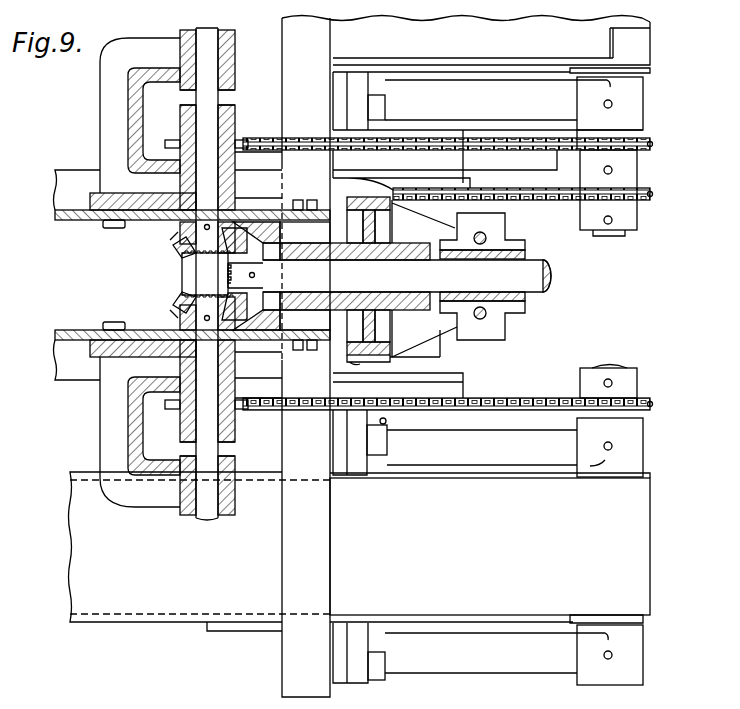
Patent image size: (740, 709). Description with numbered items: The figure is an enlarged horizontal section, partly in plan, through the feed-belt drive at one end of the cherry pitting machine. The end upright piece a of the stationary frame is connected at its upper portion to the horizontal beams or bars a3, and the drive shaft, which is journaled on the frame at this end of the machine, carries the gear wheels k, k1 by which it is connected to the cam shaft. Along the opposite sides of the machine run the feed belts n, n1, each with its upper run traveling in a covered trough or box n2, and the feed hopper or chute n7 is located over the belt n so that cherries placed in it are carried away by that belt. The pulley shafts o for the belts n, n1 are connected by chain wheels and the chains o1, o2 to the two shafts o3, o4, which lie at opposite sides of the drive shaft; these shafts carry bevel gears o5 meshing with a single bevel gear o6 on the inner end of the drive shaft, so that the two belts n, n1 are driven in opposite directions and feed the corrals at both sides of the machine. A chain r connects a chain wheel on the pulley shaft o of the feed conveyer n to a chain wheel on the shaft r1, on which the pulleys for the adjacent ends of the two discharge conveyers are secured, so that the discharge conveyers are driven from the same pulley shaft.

The upright piece a is at (306, 357).
The horizontal beam a3 is at (72, 330).
The gear wheel k is at (386, 276).
The gear wheel k1 is at (386, 228).
The feed belt n is at (466, 45).
The feed belt n1 is at (490, 548).
The covered trough n2 is at (200, 551).
The feed hopper n7 is at (612, 40).
The pulley shaft o is at (600, 240).
The chain o1 is at (522, 155).
The chain o2 is at (530, 402).
The shaft o3 is at (208, 101).
The shaft o4 is at (208, 449).
The bevel gear o5 is at (170, 294).
The bevel gear o6 is at (230, 266).
The chain r is at (557, 200).
The shaft r1 is at (402, 363).